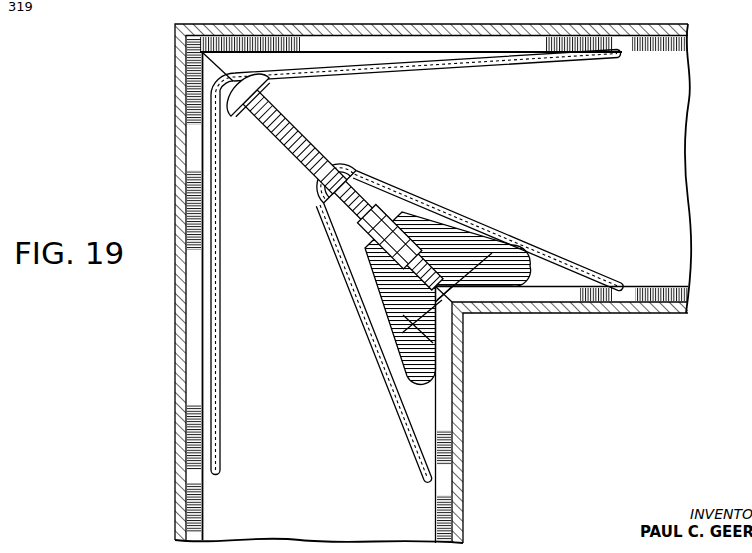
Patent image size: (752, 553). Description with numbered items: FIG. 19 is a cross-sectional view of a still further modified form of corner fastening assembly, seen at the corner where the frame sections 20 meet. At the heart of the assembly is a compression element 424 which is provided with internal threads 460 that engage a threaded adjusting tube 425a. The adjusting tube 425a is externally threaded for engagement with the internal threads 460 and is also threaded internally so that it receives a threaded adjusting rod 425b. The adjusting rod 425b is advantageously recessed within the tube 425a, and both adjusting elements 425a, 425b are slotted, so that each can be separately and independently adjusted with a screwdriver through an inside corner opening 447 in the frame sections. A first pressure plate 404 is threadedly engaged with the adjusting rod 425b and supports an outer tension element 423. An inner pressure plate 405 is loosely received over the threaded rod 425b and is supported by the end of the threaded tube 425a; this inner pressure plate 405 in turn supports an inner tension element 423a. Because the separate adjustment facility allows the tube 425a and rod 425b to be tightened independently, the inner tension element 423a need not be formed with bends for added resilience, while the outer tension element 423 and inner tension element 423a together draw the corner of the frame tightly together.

The wall panel 20 is at (455, 238).
The first pressure plate 404 is at (271, 87).
The inner pressure plate 405 is at (320, 196).
The outer tension element 423 is at (452, 70).
The inner tension element 423a is at (546, 247).
The compression element 424 is at (446, 246).
The threaded adjusting tube 425a is at (400, 245).
The threaded adjusting rod 425b is at (302, 142).
The inside corner opening 447 is at (462, 320).
The internal threads 460 is at (466, 313).